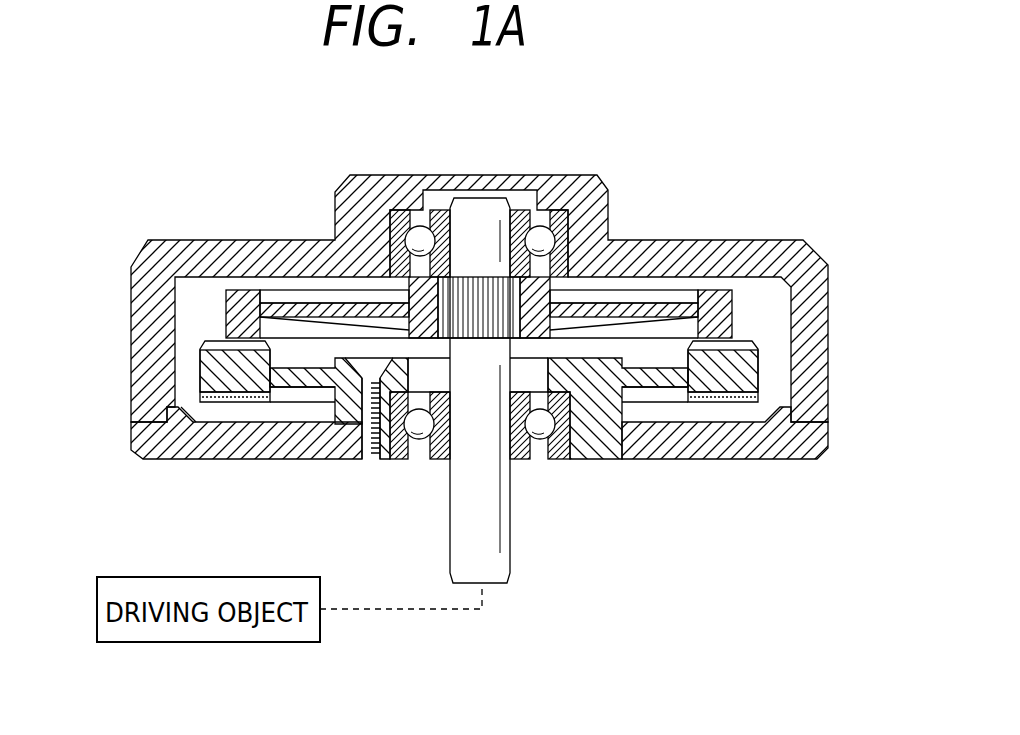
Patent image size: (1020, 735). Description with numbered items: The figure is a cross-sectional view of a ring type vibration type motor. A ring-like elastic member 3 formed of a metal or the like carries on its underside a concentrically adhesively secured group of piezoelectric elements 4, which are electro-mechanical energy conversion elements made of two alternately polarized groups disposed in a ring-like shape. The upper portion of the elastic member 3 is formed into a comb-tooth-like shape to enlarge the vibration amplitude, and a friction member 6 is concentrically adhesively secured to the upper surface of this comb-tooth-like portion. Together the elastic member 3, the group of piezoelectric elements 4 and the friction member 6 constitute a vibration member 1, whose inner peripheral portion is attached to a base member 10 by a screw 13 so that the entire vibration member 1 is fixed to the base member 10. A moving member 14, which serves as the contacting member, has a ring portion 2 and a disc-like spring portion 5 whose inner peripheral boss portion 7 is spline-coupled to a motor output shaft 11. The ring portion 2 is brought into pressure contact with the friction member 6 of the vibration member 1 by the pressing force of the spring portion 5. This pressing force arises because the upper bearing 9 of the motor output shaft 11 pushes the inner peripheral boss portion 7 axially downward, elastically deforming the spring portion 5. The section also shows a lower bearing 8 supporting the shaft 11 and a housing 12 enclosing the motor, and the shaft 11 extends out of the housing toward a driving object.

The vibration member 1 is at (497, 456).
The ring portion 2 is at (718, 293).
The elastic member 3 is at (737, 377).
The group of piezoelectric elements 4 is at (720, 373).
The spring portion 5 is at (612, 303).
The friction member 6 is at (702, 345).
The inner peripheral boss portion 7 is at (497, 189).
The lower bearing 8 is at (536, 432).
The upper bearing 9 is at (541, 226).
The base member 10 is at (272, 450).
The motor output shaft 11 is at (508, 560).
The housing 12 is at (134, 337).
The screw 13 is at (368, 455).
The moving member 14 is at (650, 290).